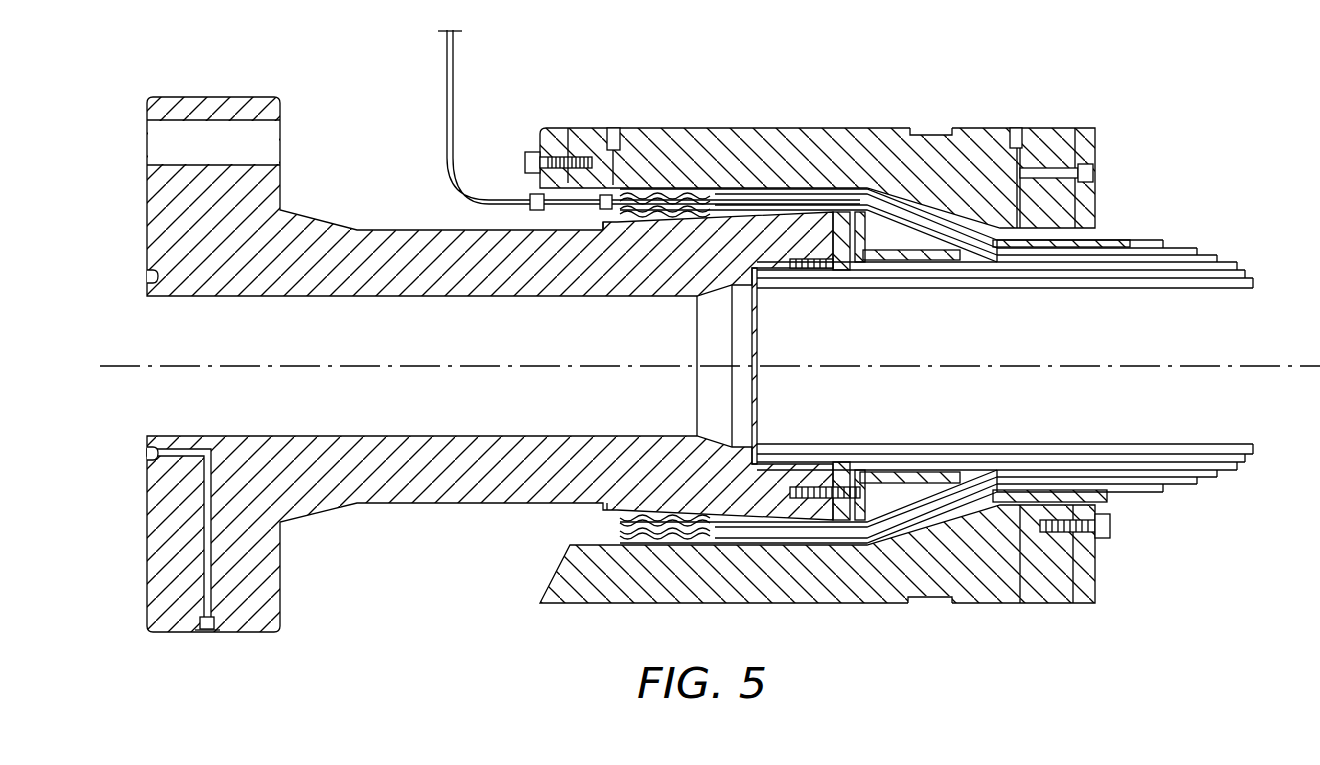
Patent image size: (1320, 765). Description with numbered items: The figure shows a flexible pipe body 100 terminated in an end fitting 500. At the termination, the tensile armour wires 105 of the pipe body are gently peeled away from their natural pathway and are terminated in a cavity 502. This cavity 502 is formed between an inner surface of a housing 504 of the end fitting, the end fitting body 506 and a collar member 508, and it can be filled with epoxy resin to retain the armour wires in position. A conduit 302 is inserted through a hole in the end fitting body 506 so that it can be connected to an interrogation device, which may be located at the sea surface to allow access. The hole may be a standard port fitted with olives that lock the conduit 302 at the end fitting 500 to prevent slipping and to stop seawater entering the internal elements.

The end fitting 500 is at (540, 627).
The end fitting body 506 is at (397, 228).
The conduit 302 is at (446, 97).
The housing 504 is at (804, 128).
The first tensile armour layer 105 is at (920, 507).
The cavity 502 is at (893, 200).
The collar member 508 is at (933, 247).
The pipe body 100 is at (1230, 492).